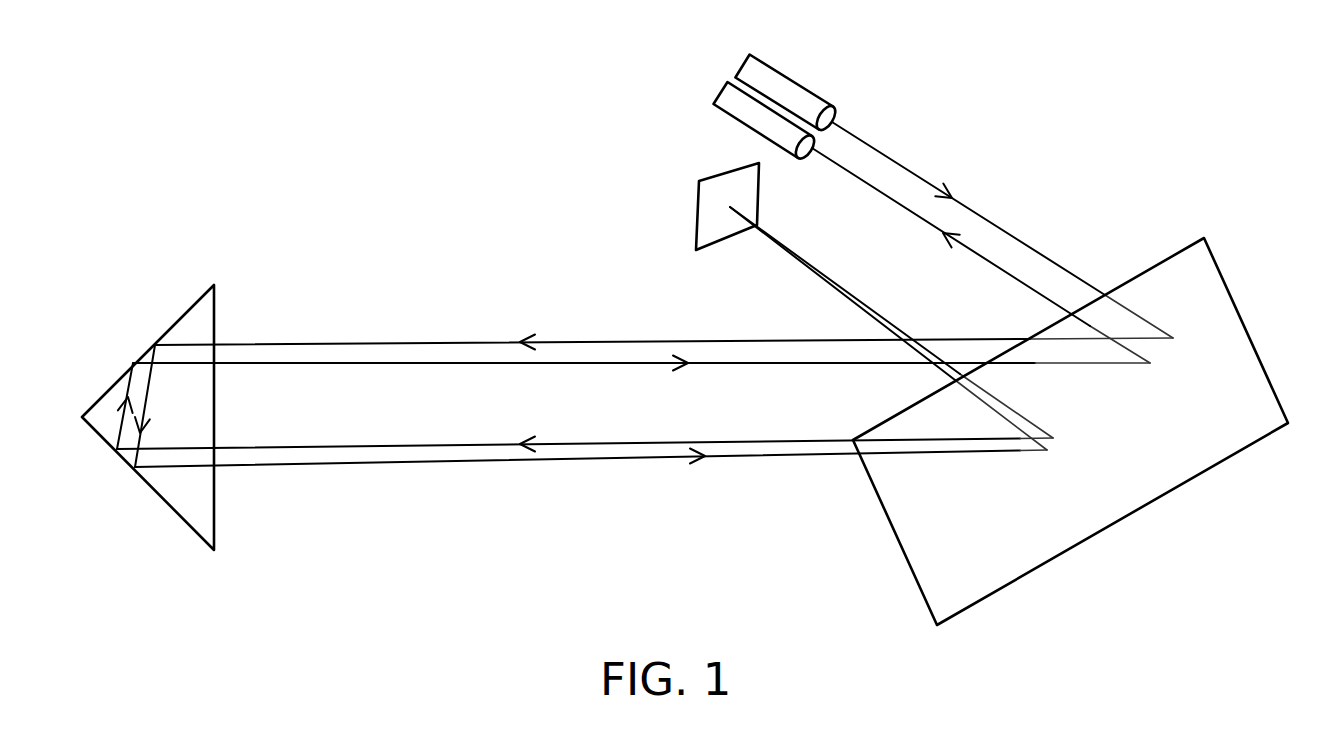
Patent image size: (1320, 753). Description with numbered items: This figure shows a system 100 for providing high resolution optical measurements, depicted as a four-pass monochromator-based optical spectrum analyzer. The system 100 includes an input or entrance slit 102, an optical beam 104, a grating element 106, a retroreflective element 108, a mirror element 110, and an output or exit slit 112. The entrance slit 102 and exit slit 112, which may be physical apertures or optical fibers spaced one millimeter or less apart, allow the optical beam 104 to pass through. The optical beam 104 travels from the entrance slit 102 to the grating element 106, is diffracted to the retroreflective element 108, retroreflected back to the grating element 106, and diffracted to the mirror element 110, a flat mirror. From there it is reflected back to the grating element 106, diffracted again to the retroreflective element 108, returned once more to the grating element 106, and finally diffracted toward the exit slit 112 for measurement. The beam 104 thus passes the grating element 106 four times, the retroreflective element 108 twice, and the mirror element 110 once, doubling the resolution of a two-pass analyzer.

The system 100 is at (407, 130).
The input or entrance slit 102 is at (775, 66).
The optical beam 104 is at (968, 208).
The grating element 106 is at (1218, 260).
The retroreflective element 108 is at (173, 317).
The mirror element 110 is at (693, 220).
The output or exit slit 112 is at (713, 101).